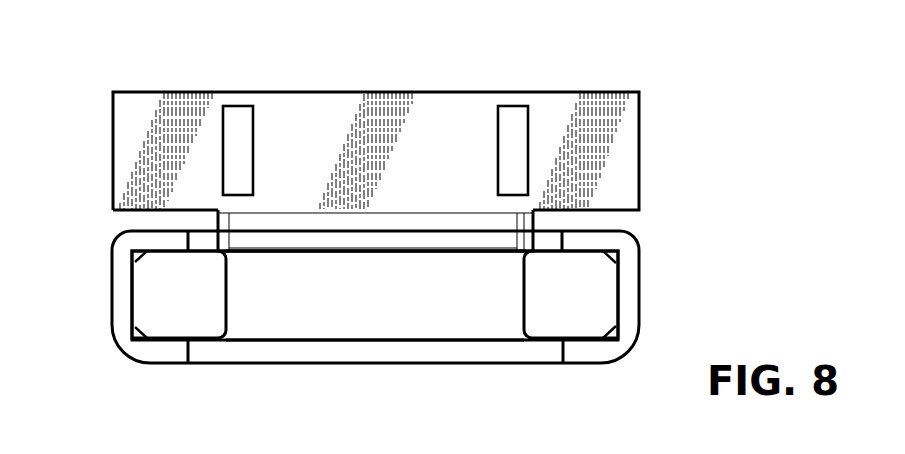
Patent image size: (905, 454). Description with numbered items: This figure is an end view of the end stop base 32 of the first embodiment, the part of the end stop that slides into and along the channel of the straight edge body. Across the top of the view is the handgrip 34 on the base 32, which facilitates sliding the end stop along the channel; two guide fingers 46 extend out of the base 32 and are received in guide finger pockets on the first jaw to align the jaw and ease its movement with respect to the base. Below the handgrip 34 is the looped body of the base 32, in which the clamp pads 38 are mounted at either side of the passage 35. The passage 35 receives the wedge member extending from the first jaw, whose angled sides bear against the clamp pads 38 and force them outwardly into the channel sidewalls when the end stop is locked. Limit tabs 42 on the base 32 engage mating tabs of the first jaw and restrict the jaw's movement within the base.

The handgrip 34 is at (623, 125).
The guide fingers 46 is at (235, 112).
The passage 35 is at (423, 327).
The base 32 is at (118, 312).
The limit tabs 42 is at (187, 347).
The clamp pads 38 is at (148, 283).